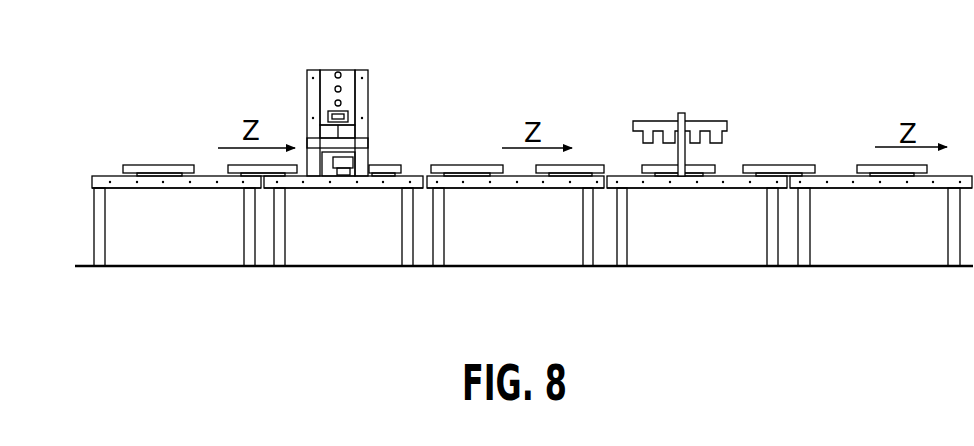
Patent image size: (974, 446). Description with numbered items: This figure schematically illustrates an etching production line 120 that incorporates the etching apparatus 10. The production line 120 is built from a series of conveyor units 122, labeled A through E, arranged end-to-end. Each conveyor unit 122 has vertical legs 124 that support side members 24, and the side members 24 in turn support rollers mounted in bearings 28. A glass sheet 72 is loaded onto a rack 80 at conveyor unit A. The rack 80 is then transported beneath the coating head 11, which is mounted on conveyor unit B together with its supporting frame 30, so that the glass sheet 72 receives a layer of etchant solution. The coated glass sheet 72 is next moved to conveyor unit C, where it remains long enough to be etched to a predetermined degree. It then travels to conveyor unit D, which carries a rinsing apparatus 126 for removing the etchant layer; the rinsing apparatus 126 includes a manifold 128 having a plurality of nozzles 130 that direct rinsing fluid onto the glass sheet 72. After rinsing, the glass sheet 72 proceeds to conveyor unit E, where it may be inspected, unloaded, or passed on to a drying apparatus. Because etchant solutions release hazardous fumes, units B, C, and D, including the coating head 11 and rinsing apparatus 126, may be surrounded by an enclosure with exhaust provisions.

The apparatus 10 is at (408, 108).
The coating head 11 is at (348, 69).
The side members 24 is at (94, 178).
The bearings 28 is at (140, 184).
The press frame 30 is at (305, 115).
The glass sheet 72 is at (177, 167).
The rack 80 is at (153, 167).
The production line 120 is at (510, 292).
The conveyor units 122 is at (193, 233).
The vertical legs 124 is at (283, 264).
The rinsing apparatus 126 is at (705, 100).
The manifold 128 is at (650, 119).
The nozzles 130 is at (700, 129).